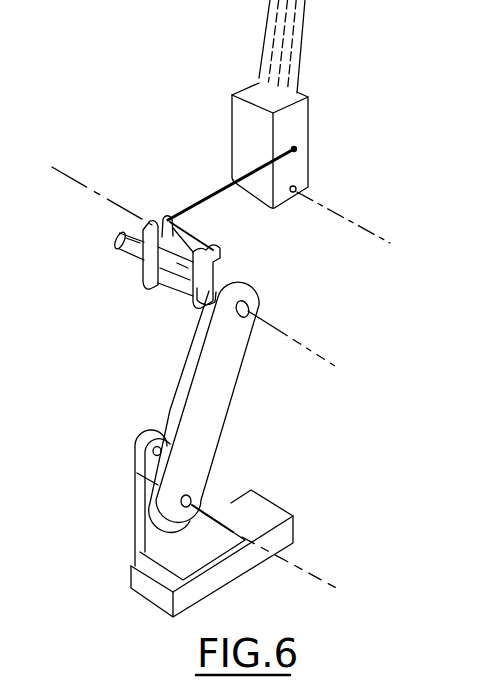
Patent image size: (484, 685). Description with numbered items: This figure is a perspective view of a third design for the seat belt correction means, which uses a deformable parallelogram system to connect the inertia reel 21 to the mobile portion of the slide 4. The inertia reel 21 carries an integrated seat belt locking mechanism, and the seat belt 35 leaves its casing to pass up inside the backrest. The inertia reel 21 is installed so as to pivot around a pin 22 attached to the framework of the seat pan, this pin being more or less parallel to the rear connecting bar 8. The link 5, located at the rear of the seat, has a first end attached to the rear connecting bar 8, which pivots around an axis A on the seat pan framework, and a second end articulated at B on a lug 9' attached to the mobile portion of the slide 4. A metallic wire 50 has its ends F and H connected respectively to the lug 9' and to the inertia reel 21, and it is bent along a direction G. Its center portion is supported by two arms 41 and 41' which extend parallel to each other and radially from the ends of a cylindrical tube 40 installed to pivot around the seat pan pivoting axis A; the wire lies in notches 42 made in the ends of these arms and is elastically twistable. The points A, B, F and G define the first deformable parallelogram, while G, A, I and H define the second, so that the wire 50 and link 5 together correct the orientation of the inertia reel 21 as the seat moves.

The seat belt 35 is at (292, 33).
The inertia reel 21 is at (298, 116).
The end of wire at inertia reel H is at (297, 149).
The vertex of second parallelogram I is at (295, 193).
The pin 22 is at (367, 229).
The metallic wire 50 is at (202, 195).
The bend direction of wire G is at (88, 185).
The rear connecting bar 8 is at (118, 250).
The notches 42 is at (182, 225).
The arm 41' is at (123, 277).
The cylindrical tube 40 is at (183, 300).
The arm 41 is at (234, 269).
The link 5 is at (222, 407).
The pivoting axis A is at (302, 346).
The end of wire at lug F is at (155, 447).
The lug 9' is at (160, 505).
The slide 4 is at (148, 591).
The articulation point B is at (330, 583).